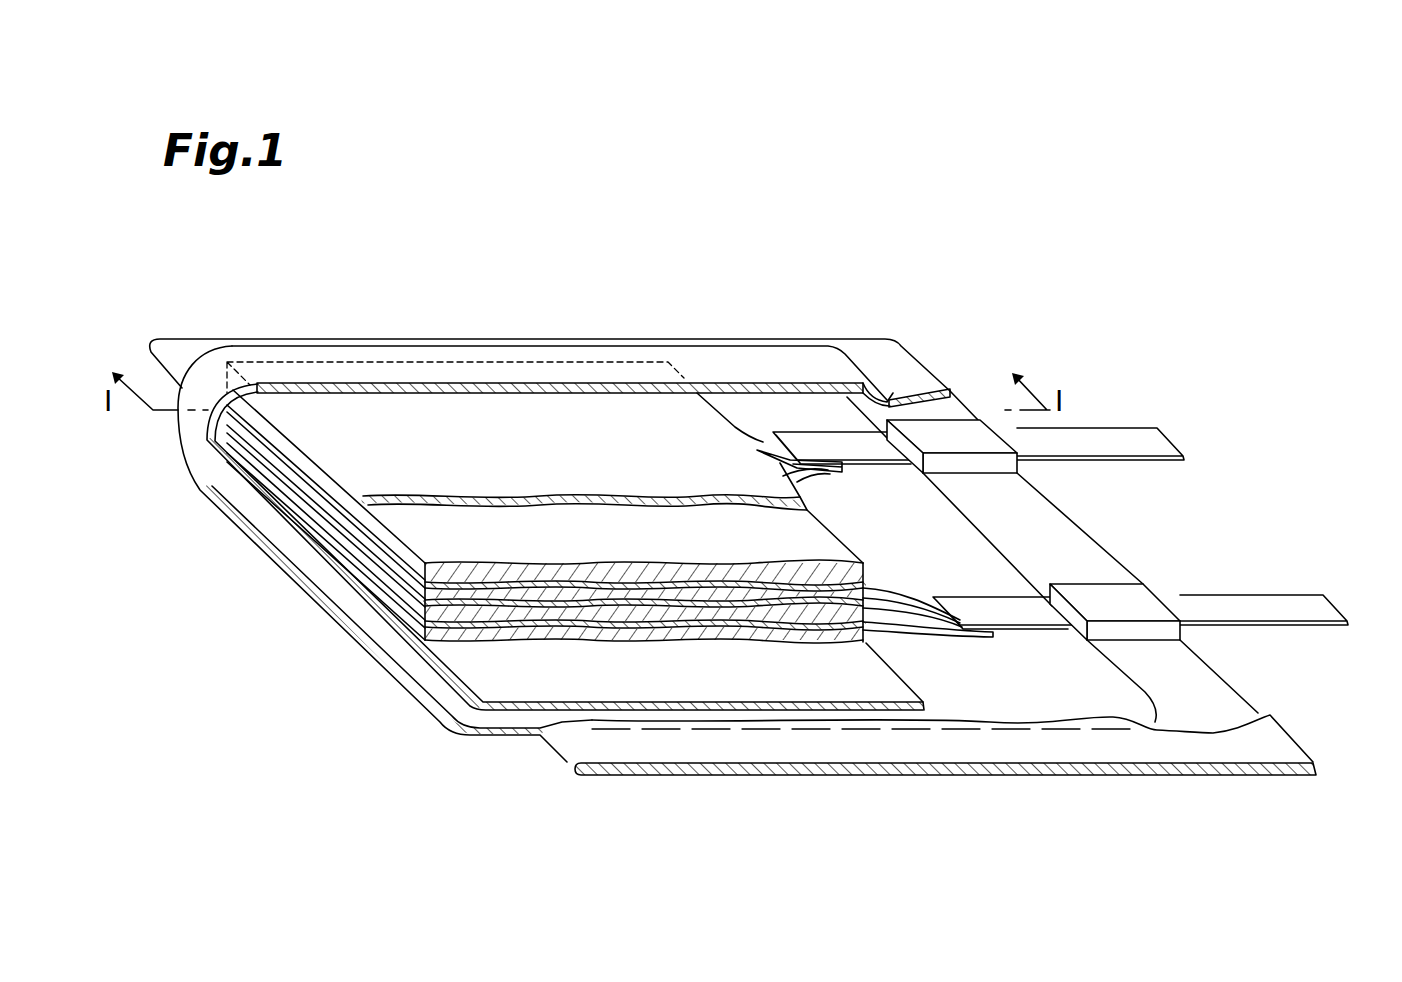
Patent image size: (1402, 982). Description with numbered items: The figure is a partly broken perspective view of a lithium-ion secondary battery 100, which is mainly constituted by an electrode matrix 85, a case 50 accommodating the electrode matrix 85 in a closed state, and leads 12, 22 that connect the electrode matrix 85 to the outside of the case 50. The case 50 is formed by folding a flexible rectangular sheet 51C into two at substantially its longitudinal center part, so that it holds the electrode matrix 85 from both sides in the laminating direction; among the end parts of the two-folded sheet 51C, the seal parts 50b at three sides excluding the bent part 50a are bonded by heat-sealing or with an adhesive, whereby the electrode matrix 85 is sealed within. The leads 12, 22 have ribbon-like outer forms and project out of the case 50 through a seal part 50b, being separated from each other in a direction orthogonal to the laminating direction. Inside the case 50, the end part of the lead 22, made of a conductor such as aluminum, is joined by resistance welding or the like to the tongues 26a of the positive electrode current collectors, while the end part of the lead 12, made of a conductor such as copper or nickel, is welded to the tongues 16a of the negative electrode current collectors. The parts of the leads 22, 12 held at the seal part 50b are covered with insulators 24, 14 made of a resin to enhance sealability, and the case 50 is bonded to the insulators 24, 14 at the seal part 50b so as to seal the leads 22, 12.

The lithium-ion secondary battery 100 is at (828, 216).
The case 50 is at (525, 338).
The bent part 50a is at (193, 434).
The seal part 50b is at (614, 346).
The flexible rectangular sheet 51C is at (692, 383).
The tongues of the negative electrode current collectors 16a is at (767, 445).
The lead 12 is at (1157, 442).
The insulator 14 is at (974, 438).
The lead 22 is at (1317, 604).
The insulator 24 is at (1135, 592).
The tongues of the positive electrode current collectors 26a is at (898, 590).
The electrode matrix 85 is at (303, 488).